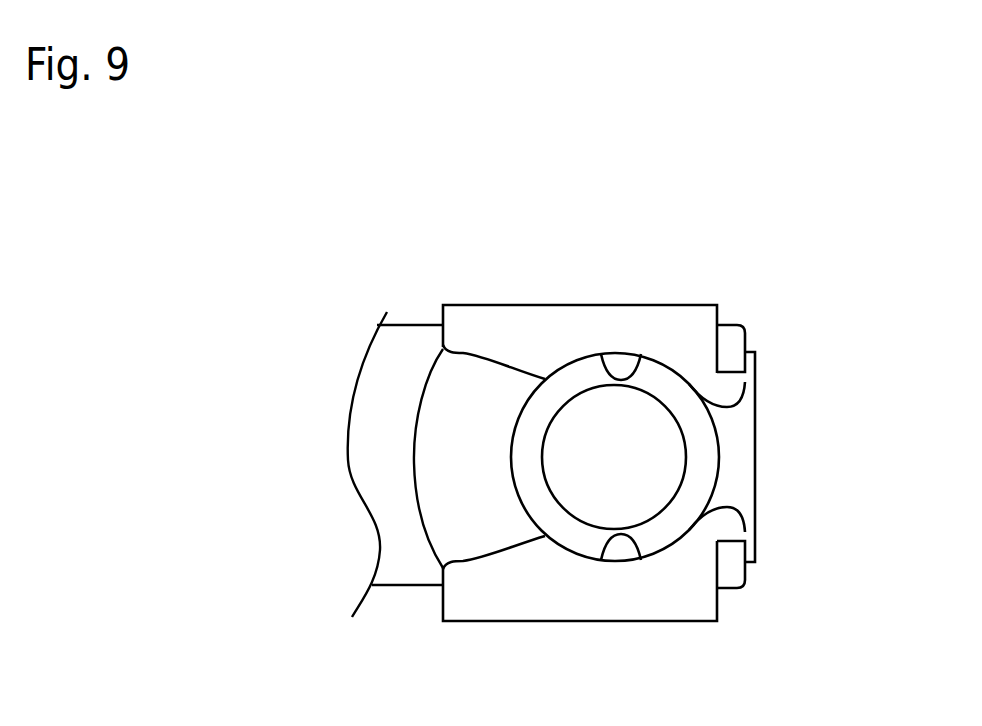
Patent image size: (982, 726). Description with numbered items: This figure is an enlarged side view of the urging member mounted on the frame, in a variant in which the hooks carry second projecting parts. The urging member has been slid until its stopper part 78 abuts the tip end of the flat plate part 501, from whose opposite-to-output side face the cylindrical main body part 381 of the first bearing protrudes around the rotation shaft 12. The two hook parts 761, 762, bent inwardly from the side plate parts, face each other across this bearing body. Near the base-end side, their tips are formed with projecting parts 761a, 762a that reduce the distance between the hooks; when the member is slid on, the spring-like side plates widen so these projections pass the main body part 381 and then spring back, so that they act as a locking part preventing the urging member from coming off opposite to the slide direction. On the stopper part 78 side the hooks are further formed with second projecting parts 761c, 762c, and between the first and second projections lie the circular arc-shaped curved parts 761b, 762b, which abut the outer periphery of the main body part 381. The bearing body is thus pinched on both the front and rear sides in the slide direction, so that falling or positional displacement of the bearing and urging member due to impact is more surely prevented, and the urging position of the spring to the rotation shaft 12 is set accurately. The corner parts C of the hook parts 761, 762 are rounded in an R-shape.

The flat plate part 501 is at (385, 345).
The corner parts C is at (445, 348).
The hook part 762 is at (478, 318).
The projecting part 762a is at (541, 373).
The curved part 762b is at (634, 372).
The second projecting part 762c is at (745, 383).
The cylindrical main body part 381 is at (713, 442).
The rotation shaft 12 is at (745, 508).
The stopper part 78 is at (748, 462).
The second projecting part 761c is at (746, 532).
The curved part 761b is at (630, 540).
The projecting part 761a is at (537, 540).
The hook part 761 is at (477, 597).